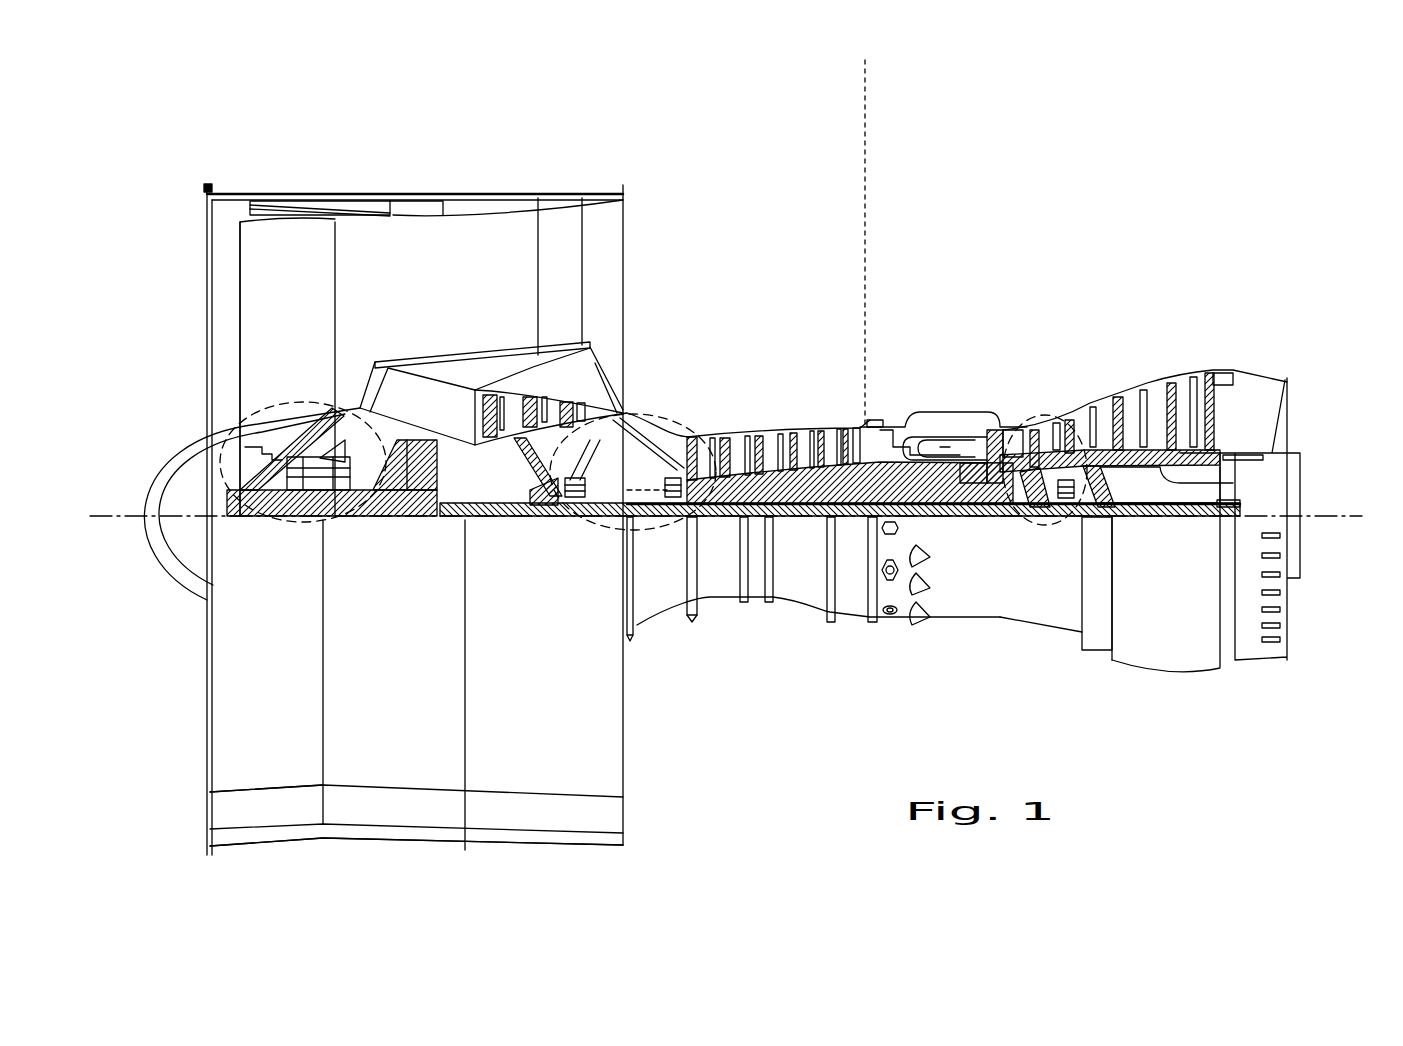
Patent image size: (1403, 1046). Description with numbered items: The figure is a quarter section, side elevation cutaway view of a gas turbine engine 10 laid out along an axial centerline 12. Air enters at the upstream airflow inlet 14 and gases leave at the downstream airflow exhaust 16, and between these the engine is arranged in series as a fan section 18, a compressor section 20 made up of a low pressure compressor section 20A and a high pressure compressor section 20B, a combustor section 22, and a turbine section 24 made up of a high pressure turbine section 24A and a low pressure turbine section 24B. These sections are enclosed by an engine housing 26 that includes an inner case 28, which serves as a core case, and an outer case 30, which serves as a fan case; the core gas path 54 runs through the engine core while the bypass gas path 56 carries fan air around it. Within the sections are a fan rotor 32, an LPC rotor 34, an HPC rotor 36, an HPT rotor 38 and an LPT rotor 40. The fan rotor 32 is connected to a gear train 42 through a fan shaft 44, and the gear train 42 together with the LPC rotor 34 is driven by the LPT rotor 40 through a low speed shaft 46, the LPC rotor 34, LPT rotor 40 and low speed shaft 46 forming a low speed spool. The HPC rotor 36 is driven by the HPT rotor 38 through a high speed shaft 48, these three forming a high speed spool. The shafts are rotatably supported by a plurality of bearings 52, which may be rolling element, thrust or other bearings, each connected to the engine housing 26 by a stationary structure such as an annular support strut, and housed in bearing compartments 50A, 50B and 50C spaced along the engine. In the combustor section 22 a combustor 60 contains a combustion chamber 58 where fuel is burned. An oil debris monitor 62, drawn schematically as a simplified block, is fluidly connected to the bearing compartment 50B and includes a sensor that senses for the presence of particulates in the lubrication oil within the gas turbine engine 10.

The gas turbine engine 10 is at (1250, 167).
The axial centerline 12 is at (1352, 516).
The upstream airflow inlet 14 is at (207, 295).
The downstream airflow exhaust 16 is at (1290, 418).
The fan section 18 is at (392, 157).
The compressor section 20 is at (865, 93).
The low pressure compressor section 20A is at (400, 328).
The high pressure compressor section 20B is at (865, 307).
The combustor section 22 is at (975, 307).
The turbine section 24 is at (1133, 313).
The high pressure turbine section 24A is at (1085, 300).
The low pressure turbine section 24B is at (1240, 300).
The engine housing 26 is at (641, 628).
The inner case 28 is at (853, 618).
The outer case 30 is at (548, 848).
The fan rotor 32 is at (256, 452).
The LPC rotor 34 is at (522, 462).
The HPC rotor 36 is at (800, 520).
The HPT rotor 38 is at (1030, 520).
The LPT rotor 40 is at (1233, 483).
The gear train 42 is at (420, 512).
The fan shaft 44 is at (283, 508).
The low speed shaft 46 is at (1172, 518).
The high speed shaft 48 is at (948, 518).
The bearing compartment 50A is at (272, 410).
The bearing compartment 50B is at (600, 385).
The bearing compartment 50C is at (1048, 432).
The bearings 52 is at (318, 520).
The core gas path 54 is at (412, 397).
The bypass gas path 56 is at (430, 276).
The combustion chamber 58 is at (946, 455).
The combustor 60 is at (955, 405).
The oil debris monitor 62 is at (632, 472).